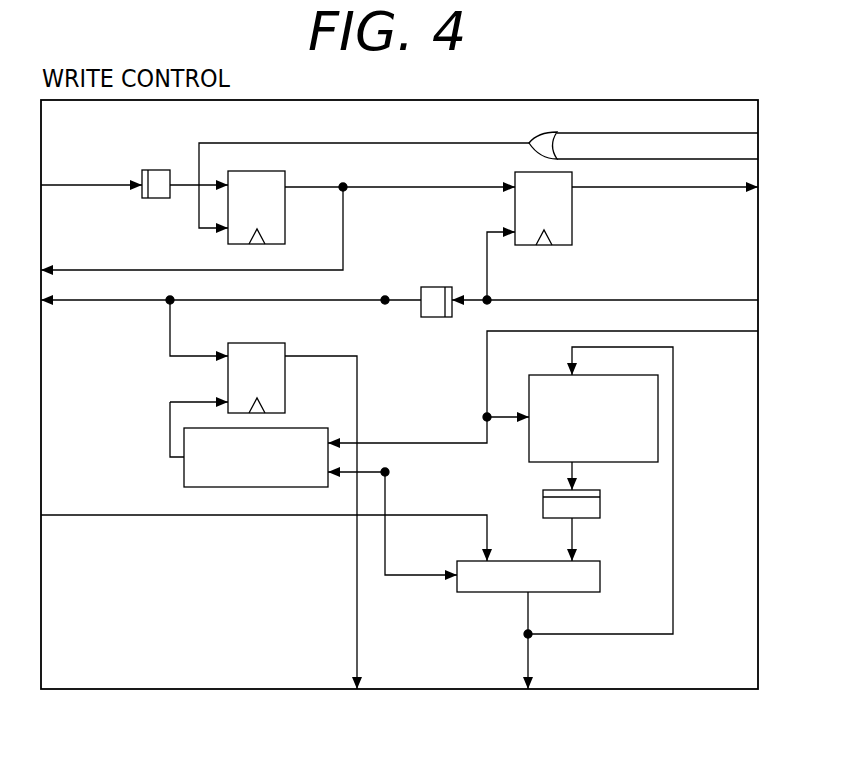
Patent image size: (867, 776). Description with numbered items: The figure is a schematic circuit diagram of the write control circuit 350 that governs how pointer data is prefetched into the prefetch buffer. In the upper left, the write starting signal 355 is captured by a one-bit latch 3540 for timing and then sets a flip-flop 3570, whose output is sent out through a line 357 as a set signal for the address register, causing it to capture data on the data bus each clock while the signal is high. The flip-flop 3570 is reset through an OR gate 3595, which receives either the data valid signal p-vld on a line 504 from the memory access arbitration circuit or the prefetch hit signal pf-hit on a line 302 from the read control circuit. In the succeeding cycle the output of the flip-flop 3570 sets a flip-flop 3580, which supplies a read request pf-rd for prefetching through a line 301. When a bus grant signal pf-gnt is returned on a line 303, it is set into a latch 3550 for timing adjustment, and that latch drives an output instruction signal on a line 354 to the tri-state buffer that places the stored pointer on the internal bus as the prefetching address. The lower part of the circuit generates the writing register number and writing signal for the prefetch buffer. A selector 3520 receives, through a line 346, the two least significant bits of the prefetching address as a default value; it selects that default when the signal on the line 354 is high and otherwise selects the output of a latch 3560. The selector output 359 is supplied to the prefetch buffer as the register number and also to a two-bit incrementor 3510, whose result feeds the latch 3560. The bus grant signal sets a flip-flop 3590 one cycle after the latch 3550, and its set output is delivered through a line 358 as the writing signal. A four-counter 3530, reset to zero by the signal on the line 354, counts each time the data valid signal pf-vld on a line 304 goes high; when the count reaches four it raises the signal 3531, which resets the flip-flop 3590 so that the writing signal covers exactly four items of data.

The write control circuit 350 is at (482, 100).
The write starting signal 355 is at (119, 182).
The one-bit latch 3540 is at (157, 170).
The flip-flop 3570 is at (283, 170).
The OR gate 3595 is at (530, 141).
The line 302 is at (603, 135).
The line 504 is at (603, 163).
The line 301 is at (598, 190).
The flip-flop 3580 is at (509, 225).
The line 357 is at (119, 275).
The line 354 is at (119, 304).
The latch 3550 is at (420, 287).
The line 303 is at (604, 300).
The line 304 is at (604, 335).
The flip-flop 3590 is at (285, 346).
The 2-bit incrementor 3510 is at (545, 373).
The signal 3531 is at (168, 426).
The 4-counter 3530 is at (287, 428).
The line 346 is at (122, 514).
The latch 3560 is at (543, 502).
The selector 3520 is at (584, 561).
The line 358 is at (357, 652).
The selector output 359 is at (528, 652).